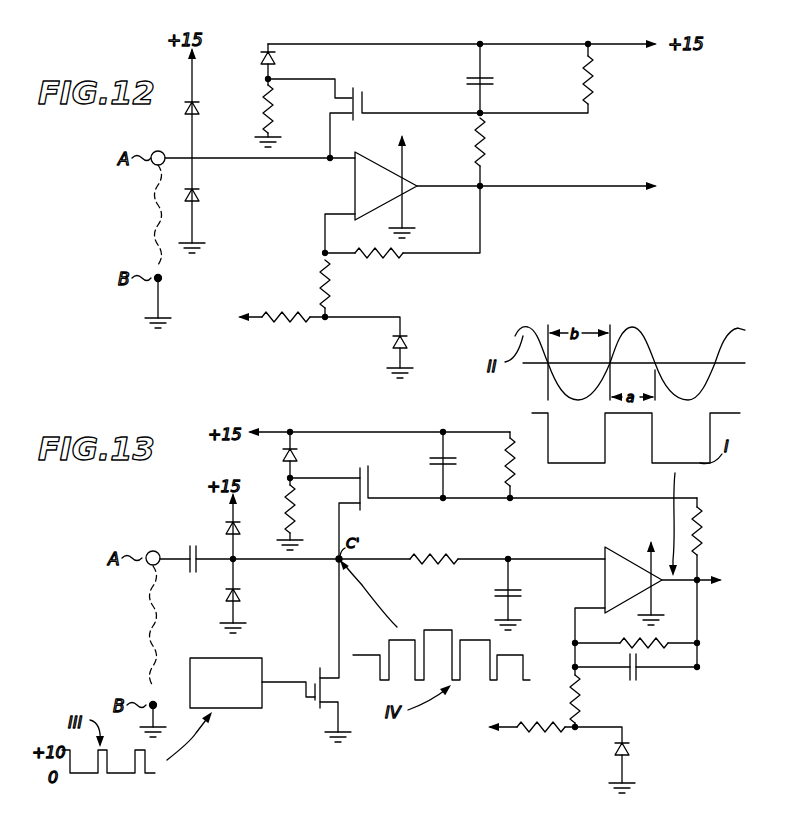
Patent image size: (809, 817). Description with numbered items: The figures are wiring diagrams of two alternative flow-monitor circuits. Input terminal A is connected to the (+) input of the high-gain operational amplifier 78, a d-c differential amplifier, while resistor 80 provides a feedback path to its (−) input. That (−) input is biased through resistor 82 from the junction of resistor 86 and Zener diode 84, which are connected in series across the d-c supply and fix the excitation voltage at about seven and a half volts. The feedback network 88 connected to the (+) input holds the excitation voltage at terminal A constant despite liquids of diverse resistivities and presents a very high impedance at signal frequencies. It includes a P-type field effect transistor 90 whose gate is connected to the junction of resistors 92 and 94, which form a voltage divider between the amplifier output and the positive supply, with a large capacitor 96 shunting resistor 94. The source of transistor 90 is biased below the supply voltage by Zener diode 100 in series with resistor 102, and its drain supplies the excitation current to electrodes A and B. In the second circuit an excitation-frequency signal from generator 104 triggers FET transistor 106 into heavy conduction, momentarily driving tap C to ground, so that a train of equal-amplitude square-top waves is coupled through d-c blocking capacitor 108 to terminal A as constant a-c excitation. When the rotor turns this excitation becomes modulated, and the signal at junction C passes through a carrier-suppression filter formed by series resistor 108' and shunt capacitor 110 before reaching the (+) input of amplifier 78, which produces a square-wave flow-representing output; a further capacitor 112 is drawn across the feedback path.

In FIG. 12, the operational amplifier 78 is at (355, 186).
In FIG. 13, the operational amplifier 78 is at (606, 580).
In FIG. 12, the resistor 80 is at (375, 259).
In FIG. 13, the resistor 80 is at (634, 642).
In FIG. 12, the resistor 82 is at (333, 292).
In FIG. 13, the resistor 82 is at (583, 690).
In FIG. 12, the Zener diode 84 is at (392, 342).
In FIG. 13, the Zener diode 84 is at (615, 755).
In FIG. 12, the resistor 86 is at (282, 312).
In FIG. 13, the resistor 86 is at (545, 726).
In FIG. 12, the feedback network 88 is at (550, 150).
In FIG. 13, the feedback network 88 is at (698, 494).
In FIG. 12, the field effect transistor 90 is at (372, 80).
In FIG. 13, the field effect transistor 90 is at (369, 467).
In FIG. 12, the resistor 92 is at (487, 140).
In FIG. 13, the resistor 92 is at (706, 529).
In FIG. 12, the resistor 94 is at (583, 80).
In FIG. 13, the resistor 94 is at (510, 476).
In FIG. 12, the capacitor 96 is at (494, 83).
In FIG. 13, the capacitor 96 is at (452, 463).
In FIG. 12, the Zener diode 100 is at (260, 60).
In FIG. 13, the Zener diode 100 is at (298, 451).
In FIG. 12, the resistor 102 is at (260, 102).
In FIG. 13, the resistor 102 is at (286, 498).
In FIG. 13, the generator 104 is at (212, 658).
In FIG. 13, the FET transistor 106 is at (316, 675).
In FIG. 13, the d-c blocking capacitor 108 is at (196, 546).
In FIG. 13, the series resistor 108' is at (507, 542).
In FIG. 13, the shunt capacitor 110 is at (495, 594).
In FIG. 13, the capacitor 112 is at (640, 678).